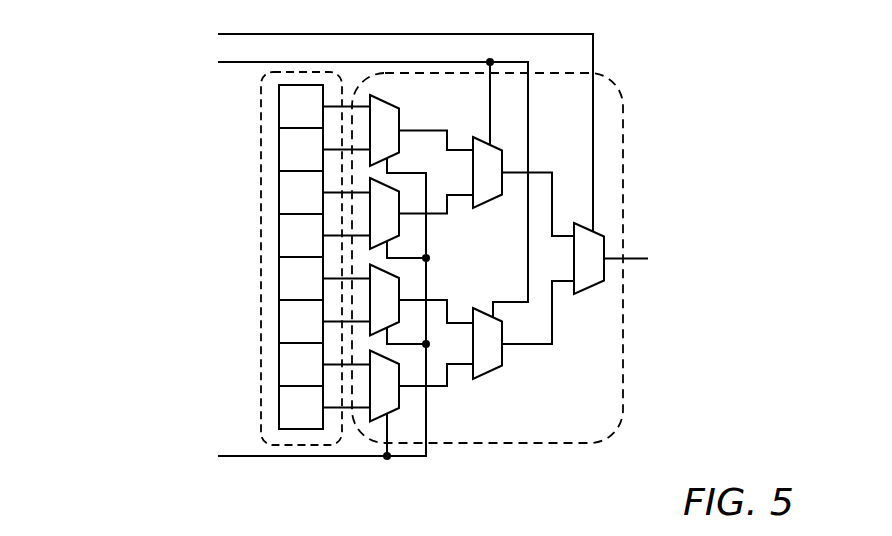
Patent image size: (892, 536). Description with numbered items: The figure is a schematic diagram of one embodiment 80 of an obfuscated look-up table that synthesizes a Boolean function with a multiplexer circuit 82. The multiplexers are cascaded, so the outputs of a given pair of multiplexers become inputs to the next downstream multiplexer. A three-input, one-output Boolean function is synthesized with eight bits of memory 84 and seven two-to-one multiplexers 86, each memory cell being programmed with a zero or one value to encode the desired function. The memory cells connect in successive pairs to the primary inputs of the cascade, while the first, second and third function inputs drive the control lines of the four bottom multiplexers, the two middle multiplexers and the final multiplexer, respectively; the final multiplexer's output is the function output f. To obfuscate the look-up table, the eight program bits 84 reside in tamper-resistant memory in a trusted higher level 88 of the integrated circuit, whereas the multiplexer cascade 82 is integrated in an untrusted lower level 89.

The embodiment of an obfuscated look-up table 80 is at (152, 65).
The multiplexer circuit 82 is at (528, 363).
The bits of memory 84 is at (278, 128).
The 2:1 multiplexer 86 is at (493, 199).
The higher level of the integrated circuit 88 is at (258, 343).
The lower level of the integrated circuit 89 is at (458, 445).